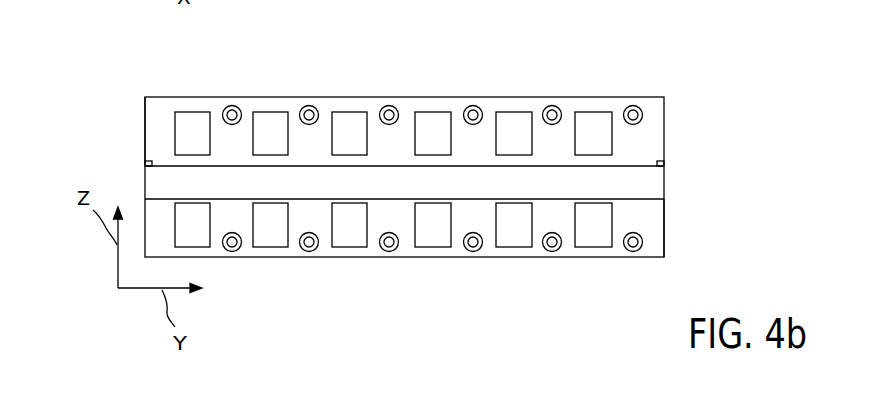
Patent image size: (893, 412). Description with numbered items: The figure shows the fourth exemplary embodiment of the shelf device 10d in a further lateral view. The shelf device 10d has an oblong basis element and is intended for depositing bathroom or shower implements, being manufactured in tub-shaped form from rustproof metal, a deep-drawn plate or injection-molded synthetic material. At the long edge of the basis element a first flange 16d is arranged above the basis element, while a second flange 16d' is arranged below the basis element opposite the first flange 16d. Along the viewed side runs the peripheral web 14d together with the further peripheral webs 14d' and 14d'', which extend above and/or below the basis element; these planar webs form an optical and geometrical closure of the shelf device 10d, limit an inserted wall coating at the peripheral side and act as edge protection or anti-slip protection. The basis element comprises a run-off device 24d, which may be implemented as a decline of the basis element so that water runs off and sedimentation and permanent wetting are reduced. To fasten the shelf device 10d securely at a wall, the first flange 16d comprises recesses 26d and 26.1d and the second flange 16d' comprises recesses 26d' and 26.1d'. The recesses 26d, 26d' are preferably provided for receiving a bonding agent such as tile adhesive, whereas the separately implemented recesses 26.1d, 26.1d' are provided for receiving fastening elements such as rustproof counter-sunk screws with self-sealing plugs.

The shelf device 10d is at (405, 176).
The peripheral web 14d is at (453, 162).
The peripheral web 14d' is at (474, 266).
The peripheral web 14d'' is at (341, 100).
The first flange 16d is at (258, 89).
The second flange 16d' is at (258, 275).
The run-off device 24d is at (659, 166).
The recess 26d is at (472, 89).
The recess 26d' is at (472, 275).
The recess 26.1d is at (433, 75).
The recess 26.1d' is at (433, 290).